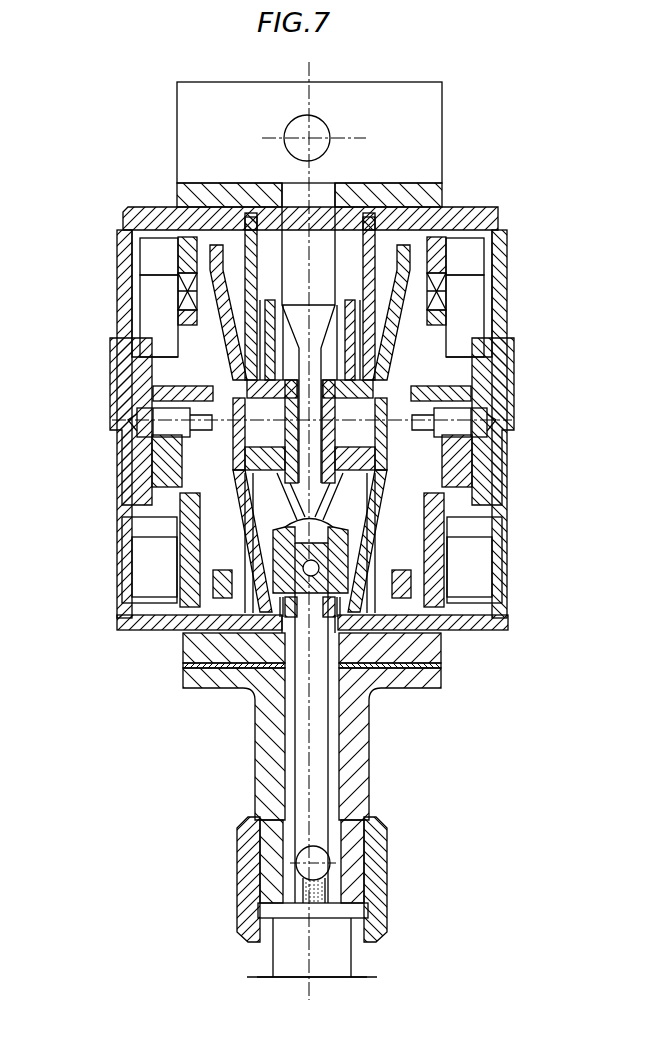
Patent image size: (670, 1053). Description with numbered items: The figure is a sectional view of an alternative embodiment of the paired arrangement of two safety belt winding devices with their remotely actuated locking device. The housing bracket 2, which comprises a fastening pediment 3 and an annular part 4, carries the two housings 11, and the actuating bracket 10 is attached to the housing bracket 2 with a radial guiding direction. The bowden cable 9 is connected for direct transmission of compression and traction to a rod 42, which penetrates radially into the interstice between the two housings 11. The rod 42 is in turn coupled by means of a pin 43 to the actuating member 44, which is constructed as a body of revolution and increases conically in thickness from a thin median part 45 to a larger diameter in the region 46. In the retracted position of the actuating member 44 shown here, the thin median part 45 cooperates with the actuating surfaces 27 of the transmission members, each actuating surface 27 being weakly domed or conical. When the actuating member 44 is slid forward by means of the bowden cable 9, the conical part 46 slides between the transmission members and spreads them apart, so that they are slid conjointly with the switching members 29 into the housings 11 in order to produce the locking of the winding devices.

The housing bracket 2 is at (177, 118).
The fastening pediment 3 is at (200, 150).
The annular part 4 is at (178, 197).
The housing 11 is at (133, 215).
The actuating surface 27 is at (472, 387).
The switching member 29 is at (240, 455).
The actuating member 44 is at (317, 330).
The thin median part 45 is at (445, 420).
The conical part 46 is at (327, 508).
The pin 43 is at (320, 582).
The rod 42 is at (327, 710).
The actuating bracket 10 is at (360, 777).
The bowden cable 9 is at (345, 888).